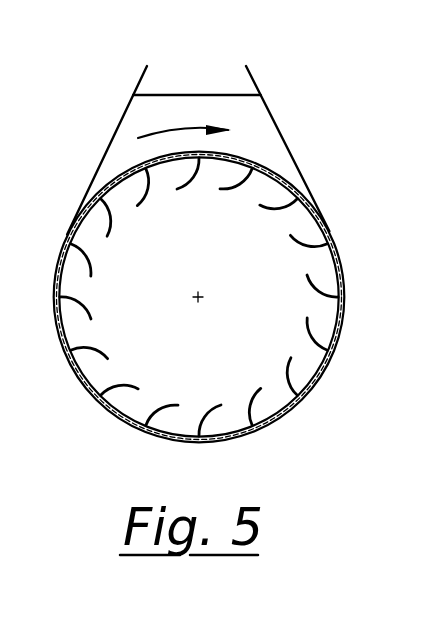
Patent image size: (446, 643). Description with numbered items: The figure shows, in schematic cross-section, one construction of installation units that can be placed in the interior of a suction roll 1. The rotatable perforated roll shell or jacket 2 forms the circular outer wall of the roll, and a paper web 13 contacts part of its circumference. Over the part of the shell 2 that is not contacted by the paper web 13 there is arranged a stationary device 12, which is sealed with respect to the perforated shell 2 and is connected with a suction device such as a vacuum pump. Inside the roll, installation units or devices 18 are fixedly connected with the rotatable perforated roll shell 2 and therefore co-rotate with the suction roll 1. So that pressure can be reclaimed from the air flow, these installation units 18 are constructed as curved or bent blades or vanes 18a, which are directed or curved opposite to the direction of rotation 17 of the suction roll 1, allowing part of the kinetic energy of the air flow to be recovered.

The suction roll 1 is at (78, 400).
The perforated roll shell 2 is at (318, 385).
The stationary device 12 is at (252, 126).
The paper web 13 is at (140, 78).
The direction of rotation 17 is at (188, 130).
The installation units 18 is at (302, 247).
The curved blades 18a is at (290, 193).